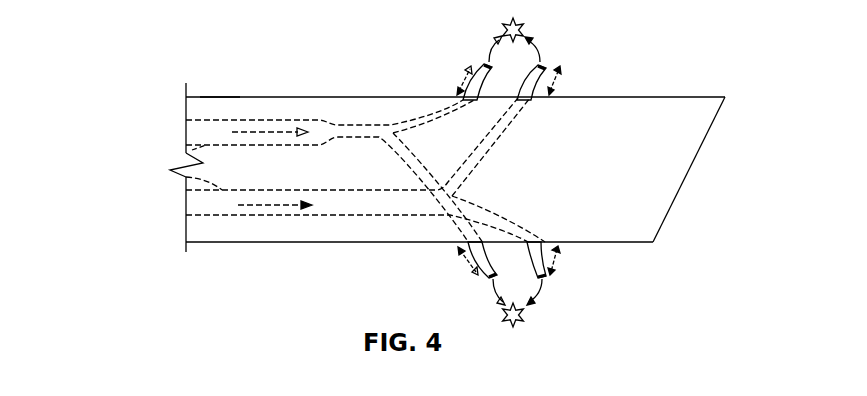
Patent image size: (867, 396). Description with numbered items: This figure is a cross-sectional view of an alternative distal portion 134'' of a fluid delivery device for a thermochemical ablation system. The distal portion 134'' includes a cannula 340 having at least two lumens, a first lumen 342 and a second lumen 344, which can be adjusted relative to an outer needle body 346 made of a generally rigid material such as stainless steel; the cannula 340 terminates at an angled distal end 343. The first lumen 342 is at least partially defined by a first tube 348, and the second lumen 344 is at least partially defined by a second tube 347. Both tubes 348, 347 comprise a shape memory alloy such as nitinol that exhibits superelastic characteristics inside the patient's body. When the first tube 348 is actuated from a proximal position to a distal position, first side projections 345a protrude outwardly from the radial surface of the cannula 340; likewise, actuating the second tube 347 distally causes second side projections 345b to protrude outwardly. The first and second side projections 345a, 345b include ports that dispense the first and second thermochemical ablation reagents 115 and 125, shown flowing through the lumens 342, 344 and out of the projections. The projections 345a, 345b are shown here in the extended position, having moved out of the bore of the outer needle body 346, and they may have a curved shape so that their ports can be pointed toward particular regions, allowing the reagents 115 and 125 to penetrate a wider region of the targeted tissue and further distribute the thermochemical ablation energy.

The distal portion 134'' is at (410, 172).
The cannula 340 is at (232, 94).
The angled edge facet 343 is at (708, 138).
The outer needle body 346 is at (217, 97).
The first tube 348 is at (183, 155).
The second tube 347 is at (183, 172).
The first lumen 342 is at (195, 132).
The second lumen 344 is at (195, 205).
The first thermochemical ablation reagent 115 is at (259, 131).
The second thermochemical ablation reagent 125 is at (270, 207).
The first side projections 345a is at (480, 64).
The second side projections 345b is at (547, 64).